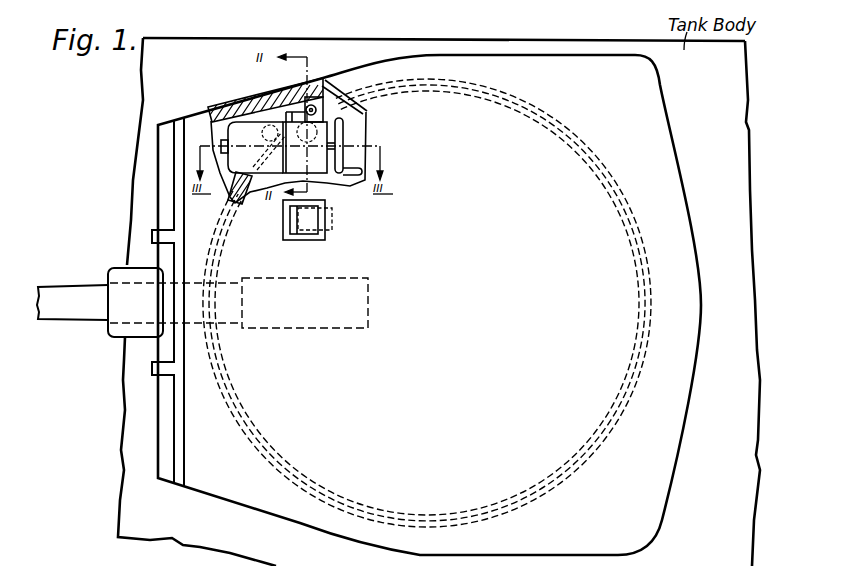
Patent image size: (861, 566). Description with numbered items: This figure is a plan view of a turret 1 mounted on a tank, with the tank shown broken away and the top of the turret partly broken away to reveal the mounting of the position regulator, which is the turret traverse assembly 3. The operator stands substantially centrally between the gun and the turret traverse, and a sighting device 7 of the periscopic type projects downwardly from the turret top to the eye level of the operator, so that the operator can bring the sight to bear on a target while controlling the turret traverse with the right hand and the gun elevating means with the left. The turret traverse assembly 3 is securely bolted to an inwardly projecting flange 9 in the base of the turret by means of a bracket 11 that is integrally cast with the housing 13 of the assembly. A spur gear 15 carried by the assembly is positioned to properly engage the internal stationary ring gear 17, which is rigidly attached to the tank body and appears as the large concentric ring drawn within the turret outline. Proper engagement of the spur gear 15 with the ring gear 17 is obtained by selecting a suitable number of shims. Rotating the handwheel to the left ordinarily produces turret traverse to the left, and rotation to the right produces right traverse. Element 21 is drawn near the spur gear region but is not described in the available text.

The turret 1 is at (469, 53).
The turret traverse assembly 3 is at (242, 137).
The sighting device 7 is at (300, 228).
The inwardly projecting flange 9 is at (262, 116).
The bracket 11 is at (278, 122).
The housing 13 is at (294, 120).
The spur gear 15 is at (345, 124).
The internal stationary ring gear 17 is at (412, 88).
The lever foot 21 is at (345, 135).